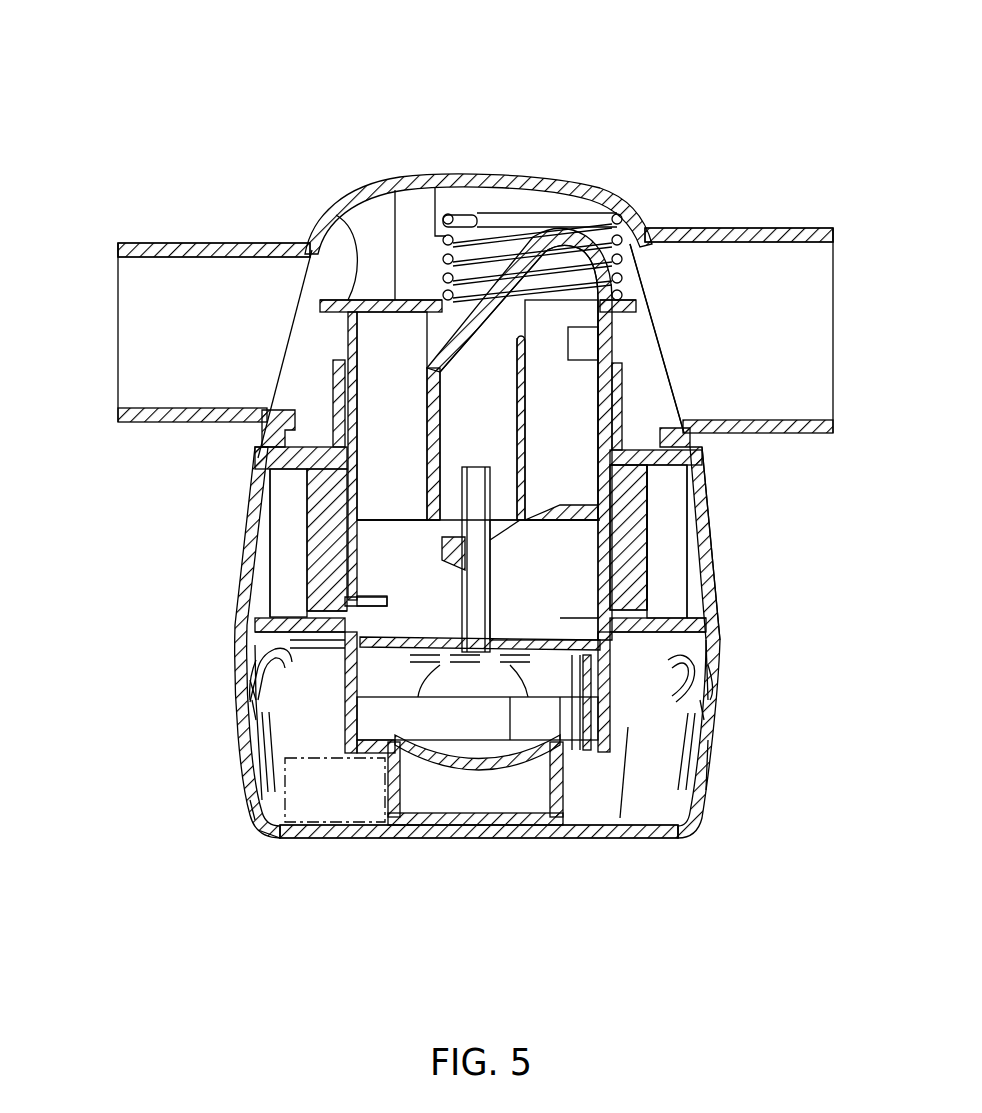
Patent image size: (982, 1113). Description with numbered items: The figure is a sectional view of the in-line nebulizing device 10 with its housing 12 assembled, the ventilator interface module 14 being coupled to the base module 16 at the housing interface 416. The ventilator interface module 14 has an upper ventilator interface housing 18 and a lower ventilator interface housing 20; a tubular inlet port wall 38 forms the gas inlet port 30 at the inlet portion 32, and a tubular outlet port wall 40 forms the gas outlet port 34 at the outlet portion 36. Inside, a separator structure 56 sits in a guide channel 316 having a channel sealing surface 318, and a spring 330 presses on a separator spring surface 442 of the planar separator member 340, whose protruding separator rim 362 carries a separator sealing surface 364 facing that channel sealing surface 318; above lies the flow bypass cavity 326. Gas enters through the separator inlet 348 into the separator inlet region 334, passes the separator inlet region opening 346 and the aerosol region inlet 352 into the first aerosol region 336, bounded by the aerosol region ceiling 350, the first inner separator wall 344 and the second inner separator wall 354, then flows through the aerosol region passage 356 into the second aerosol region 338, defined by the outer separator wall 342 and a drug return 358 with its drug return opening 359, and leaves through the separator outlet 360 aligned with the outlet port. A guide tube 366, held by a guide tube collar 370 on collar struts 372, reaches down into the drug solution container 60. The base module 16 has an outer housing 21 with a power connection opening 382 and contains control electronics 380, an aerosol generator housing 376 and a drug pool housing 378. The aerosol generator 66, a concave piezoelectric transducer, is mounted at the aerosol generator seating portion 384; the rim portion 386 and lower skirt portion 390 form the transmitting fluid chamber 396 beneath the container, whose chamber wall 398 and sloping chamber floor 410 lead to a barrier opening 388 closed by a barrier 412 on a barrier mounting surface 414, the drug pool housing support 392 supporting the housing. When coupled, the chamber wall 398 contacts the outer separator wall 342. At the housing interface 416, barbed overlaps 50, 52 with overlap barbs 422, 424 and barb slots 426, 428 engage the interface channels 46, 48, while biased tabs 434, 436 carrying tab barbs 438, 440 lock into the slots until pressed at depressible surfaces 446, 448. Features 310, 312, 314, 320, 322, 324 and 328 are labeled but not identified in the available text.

The in-line nebulizing device 10 is at (263, 68).
The housing 12 is at (222, 940).
The ventilator interface module 14 is at (133, 460).
The base module 16 is at (706, 790).
The upper ventilator interface housing 18 is at (655, 185).
The lower ventilator interface housing 20 is at (812, 490).
The outer housing 21 is at (295, 840).
The gas inlet port 30 is at (115, 322).
The inlet portion 32 is at (122, 545).
The gas outlet port 34 is at (850, 312).
The outlet portion 36 is at (830, 605).
The tubular inlet port wall 38 is at (165, 243).
The tubular outlet port wall 40 is at (790, 228).
The first interface channel 46 is at (668, 690).
The second interface channel 48 is at (292, 670).
The first barbed overlap 50 is at (700, 642).
The second barbed overlap 52 is at (280, 640).
The separator structure 56 is at (407, 212).
The drug solution container 60 is at (545, 624).
The aerosol generator 66 is at (455, 768).
The housing wall 310 is at (712, 585).
The housing block 312 is at (645, 525).
The housing portion 314 is at (655, 495).
The guide channel 316 is at (685, 560).
The channel sealing surface 318 is at (333, 362).
The step 320 is at (305, 442).
The cover dome 322 is at (440, 180).
The chamber 324 is at (290, 466).
The flow bypass cavity 326 is at (400, 292).
The spring plate 328 is at (475, 200).
The spring 330 is at (618, 214).
The separator inlet region 334 is at (412, 404).
The first aerosol region 336 is at (495, 404).
The second aerosol region 338 is at (577, 404).
The planar separator member 340 is at (348, 298).
The outer separator wall 342 is at (300, 500).
The first inner separator wall 344 is at (430, 420).
The separator inlet region opening 346 is at (395, 506).
The separator inlet 348 is at (348, 340).
The aerosol region ceiling 350 is at (500, 252).
The aerosol region inlet 352 is at (435, 542).
The second inner separator wall 354 is at (518, 338).
The aerosol region passage 356 is at (540, 310).
The drug return 358 is at (548, 505).
The drug return opening 359 is at (638, 535).
The separator outlet 360 is at (590, 345).
The protruding separator rim 362 is at (330, 300).
The separator sealing surface 364 is at (330, 308).
The guide tube 366 is at (500, 600).
The guide tube collar 370 is at (486, 490).
The collar struts 372 is at (420, 520).
The aerosol generator housing 376 is at (568, 792).
The drug pool housing 378 is at (632, 730).
The control electronics 380 is at (349, 804).
The power connection opening 382 is at (262, 810).
The aerosol generator seating portion 384 is at (400, 792).
The rim portion 386 is at (265, 830).
The barrier opening 388 is at (442, 640).
The lower skirt portion 390 is at (350, 592).
The drug pool housing support 392 is at (665, 612).
The transmitting fluid chamber 396 is at (469, 729).
The chamber wall 398 is at (420, 545).
The chamber floor 410 is at (560, 618).
The barrier 412 is at (525, 690).
The barrier mounting surface 414 is at (400, 690).
The housing interface 416 is at (133, 672).
The first overlap barb 422 is at (700, 668).
The second overlap barb 424 is at (270, 665).
The first barb slot 426 is at (712, 682).
The second barb slot 428 is at (278, 680).
The first biased tab 434 is at (706, 705).
The second biased tab 436 is at (262, 702).
The first tab barb 438 is at (688, 702).
The second tab barb 440 is at (330, 712).
The separator spring surface 442 is at (668, 247).
The first depressible surface 446 is at (708, 755).
The second depressible surface 448 is at (262, 745).